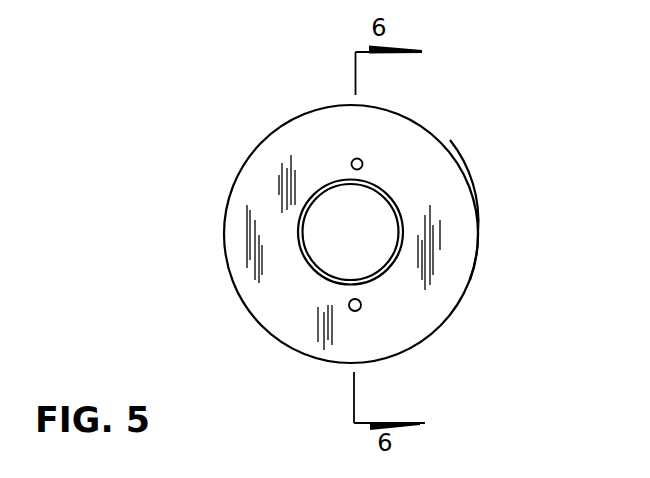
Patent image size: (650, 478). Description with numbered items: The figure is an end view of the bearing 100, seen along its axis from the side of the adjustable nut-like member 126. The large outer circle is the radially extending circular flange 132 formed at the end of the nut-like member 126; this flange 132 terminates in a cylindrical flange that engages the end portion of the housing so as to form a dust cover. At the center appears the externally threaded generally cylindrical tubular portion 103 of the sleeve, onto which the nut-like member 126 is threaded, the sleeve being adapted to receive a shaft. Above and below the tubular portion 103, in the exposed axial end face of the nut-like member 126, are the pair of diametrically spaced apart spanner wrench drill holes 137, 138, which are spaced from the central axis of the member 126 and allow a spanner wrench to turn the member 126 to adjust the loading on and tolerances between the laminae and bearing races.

The bearing 100 is at (268, 123).
The externally threaded generally cylindrical tubular portion 103 is at (401, 221).
The nut-like member 126 is at (468, 236).
The radially extending circular flange 132 is at (476, 202).
The spanner wrench drill hole 137 is at (362, 161).
The spanner wrench drill hole 138 is at (361, 306).